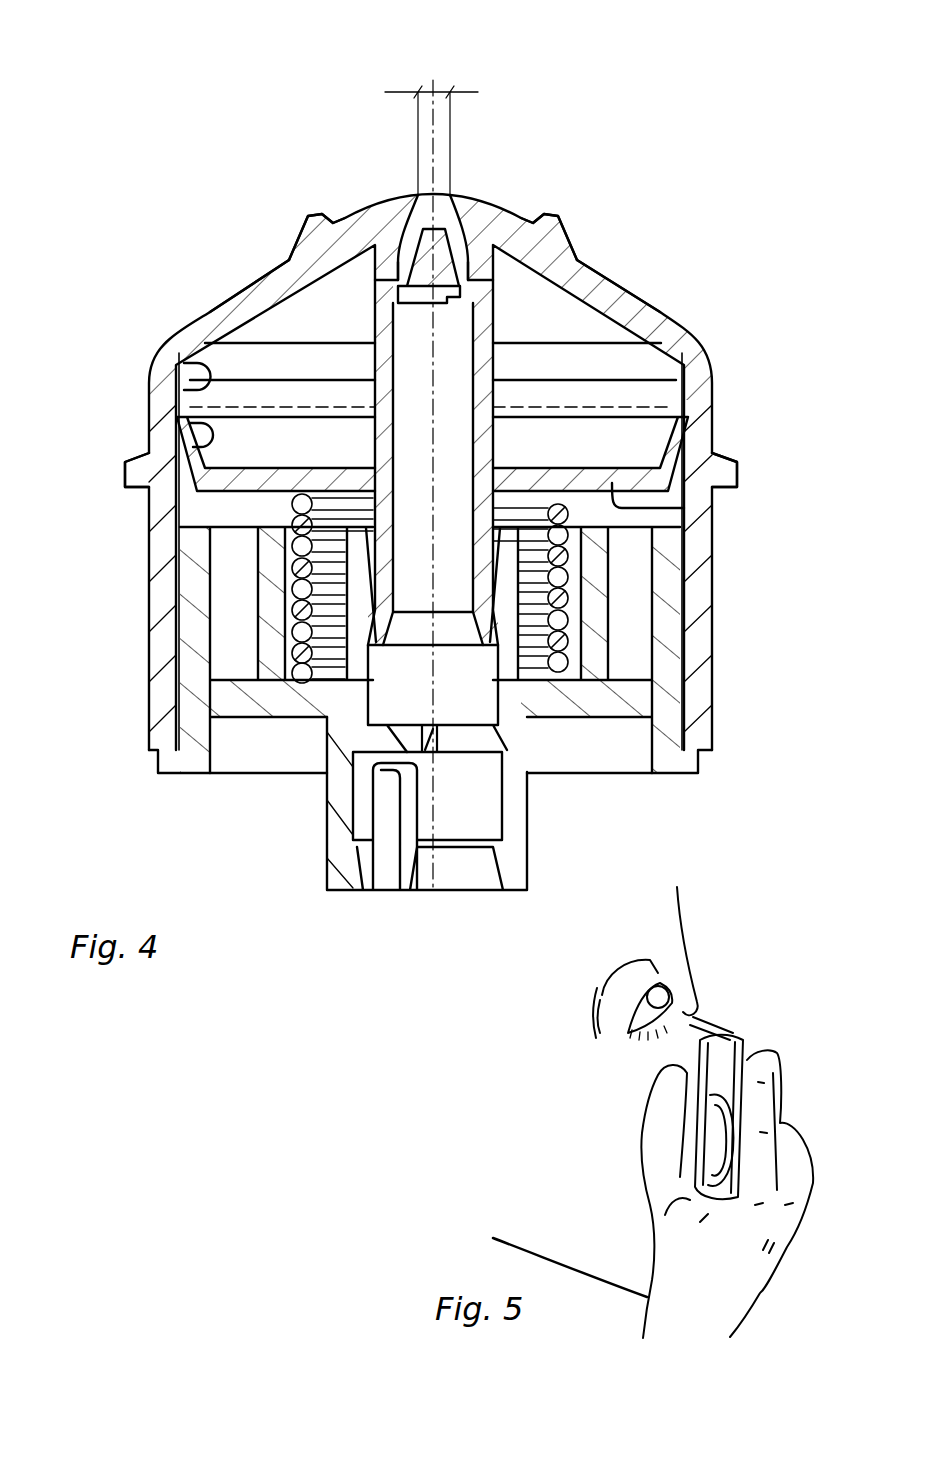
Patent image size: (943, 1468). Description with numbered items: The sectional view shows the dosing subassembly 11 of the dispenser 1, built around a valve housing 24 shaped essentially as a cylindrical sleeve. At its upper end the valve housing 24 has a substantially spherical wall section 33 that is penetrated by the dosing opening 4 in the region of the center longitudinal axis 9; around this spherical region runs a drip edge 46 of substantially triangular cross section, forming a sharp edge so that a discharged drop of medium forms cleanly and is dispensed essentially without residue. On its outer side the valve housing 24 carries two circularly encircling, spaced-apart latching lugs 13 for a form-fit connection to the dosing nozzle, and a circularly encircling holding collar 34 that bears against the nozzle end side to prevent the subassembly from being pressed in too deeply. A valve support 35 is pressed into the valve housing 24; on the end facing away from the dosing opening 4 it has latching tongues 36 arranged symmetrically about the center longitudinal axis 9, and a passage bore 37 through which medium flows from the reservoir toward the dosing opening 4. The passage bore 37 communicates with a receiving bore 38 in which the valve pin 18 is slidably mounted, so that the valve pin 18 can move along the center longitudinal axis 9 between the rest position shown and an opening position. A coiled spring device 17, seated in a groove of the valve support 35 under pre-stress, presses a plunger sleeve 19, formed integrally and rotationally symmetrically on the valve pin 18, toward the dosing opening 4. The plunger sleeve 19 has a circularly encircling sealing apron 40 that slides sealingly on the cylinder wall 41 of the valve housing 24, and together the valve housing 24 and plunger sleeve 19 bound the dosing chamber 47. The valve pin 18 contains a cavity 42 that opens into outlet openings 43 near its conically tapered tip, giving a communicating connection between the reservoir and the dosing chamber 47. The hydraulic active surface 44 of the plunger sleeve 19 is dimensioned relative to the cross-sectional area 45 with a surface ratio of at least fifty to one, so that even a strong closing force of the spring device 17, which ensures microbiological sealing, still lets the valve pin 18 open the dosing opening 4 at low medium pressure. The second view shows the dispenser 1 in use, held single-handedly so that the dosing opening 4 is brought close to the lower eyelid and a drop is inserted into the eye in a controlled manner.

In FIG. 5, the dispenser 1 is at (753, 1008).
In FIG. 4, the dosing opening 4 is at (447, 184).
In FIG. 5, the dosing opening 4 is at (693, 994).
In FIG. 4, the center longitudinal axis 9 is at (437, 347).
In FIG. 4, the dosing subassembly 11 is at (686, 258).
In FIG. 4, the latching lugs 13 is at (150, 660).
In FIG. 4, the spring device 17 is at (568, 615).
In FIG. 4, the valve pin 18 is at (300, 365).
In FIG. 4, the plunger sleeve 19 is at (614, 487).
In FIG. 4, the valve housing 24 is at (163, 512).
In FIG. 4, the wall section 33 is at (228, 306).
In FIG. 4, the holding collar 34 is at (128, 473).
In FIG. 4, the valve support 35 is at (178, 763).
In FIG. 4, the latching tongues 36 is at (347, 858).
In FIG. 4, the passage bore 37 is at (447, 735).
In FIG. 4, the receiving bore 38 is at (360, 683).
In FIG. 4, the sealing apron 40 is at (167, 424).
In FIG. 4, the cylinder wall 41 is at (190, 363).
In FIG. 4, the cavity 42 is at (452, 413).
In FIG. 4, the outlet openings 43 is at (396, 258).
In FIG. 4, the hydraulic active surface 44 is at (633, 412).
In FIG. 4, the cross-sectional area 45 is at (437, 92).
In FIG. 4, the drip edge 46 is at (552, 228).
In FIG. 4, the dosing chamber 47 is at (383, 323).